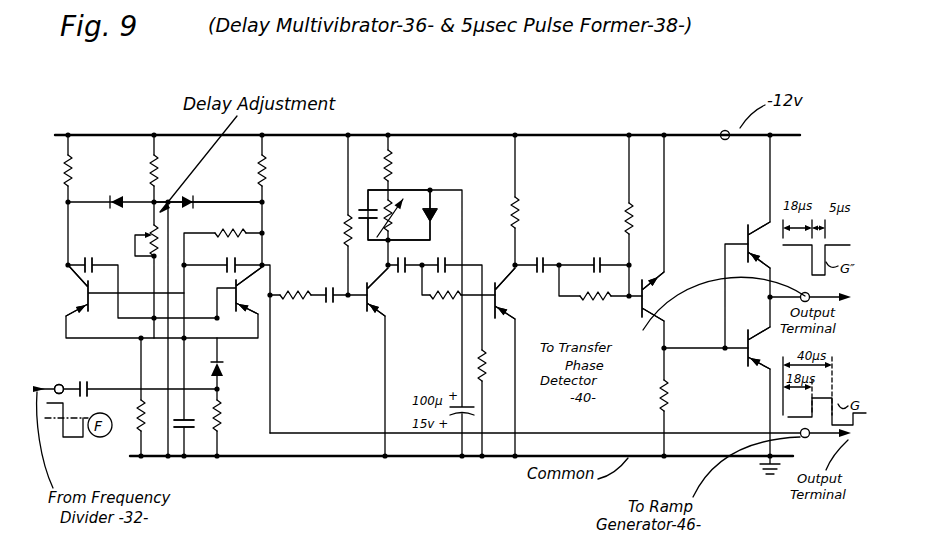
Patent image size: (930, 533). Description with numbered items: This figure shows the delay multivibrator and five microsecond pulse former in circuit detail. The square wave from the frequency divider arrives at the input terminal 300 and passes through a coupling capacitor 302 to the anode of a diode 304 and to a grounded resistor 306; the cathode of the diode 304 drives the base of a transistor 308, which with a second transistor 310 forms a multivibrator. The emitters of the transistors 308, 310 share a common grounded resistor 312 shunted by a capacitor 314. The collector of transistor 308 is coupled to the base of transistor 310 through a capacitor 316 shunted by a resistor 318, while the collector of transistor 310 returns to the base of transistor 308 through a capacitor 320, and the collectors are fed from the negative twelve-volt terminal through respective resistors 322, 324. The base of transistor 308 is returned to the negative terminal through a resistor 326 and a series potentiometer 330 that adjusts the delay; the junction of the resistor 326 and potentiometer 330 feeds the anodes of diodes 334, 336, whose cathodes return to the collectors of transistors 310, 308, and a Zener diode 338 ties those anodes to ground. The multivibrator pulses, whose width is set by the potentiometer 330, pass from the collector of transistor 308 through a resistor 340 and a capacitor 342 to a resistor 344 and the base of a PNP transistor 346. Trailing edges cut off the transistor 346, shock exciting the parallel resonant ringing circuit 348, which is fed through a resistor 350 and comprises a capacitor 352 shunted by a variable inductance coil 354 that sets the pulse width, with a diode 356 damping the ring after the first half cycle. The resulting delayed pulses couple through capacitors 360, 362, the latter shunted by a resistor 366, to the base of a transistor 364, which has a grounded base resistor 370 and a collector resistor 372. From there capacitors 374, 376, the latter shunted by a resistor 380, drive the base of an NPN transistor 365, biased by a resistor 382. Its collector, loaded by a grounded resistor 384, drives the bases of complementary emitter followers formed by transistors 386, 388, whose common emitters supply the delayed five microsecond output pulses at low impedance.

The input terminal 300 is at (60, 384).
The coupling capacitor 302 is at (90, 384).
The diode 304 is at (220, 372).
The grounded resistor 306 is at (240, 412).
The transistor 308 is at (225, 290).
The second transistor 310 is at (100, 306).
The common grounded resistor 312 is at (137, 425).
The capacitor 314 is at (190, 430).
The capacitor 316 is at (240, 265).
The resistor 318 is at (258, 216).
The capacitor 320 is at (108, 246).
The resistor 322 is at (264, 178).
The resistor 324 is at (70, 168).
The resistor 326 is at (158, 176).
The series potentiometer 330 is at (140, 224).
The diode 334 is at (110, 199).
The diode 336 is at (197, 199).
The Zener diode 338 is at (215, 233).
The resistor 340 is at (300, 300).
The capacitor 342 is at (300, 290).
The resistor 344 is at (345, 236).
The PNP transistor 346 is at (366, 312).
The parallel resonant ringing circuit 348 is at (406, 232).
The resistor 350 is at (392, 162).
The capacitor 352 is at (362, 207).
The variable inductance coil 354 is at (402, 200).
The diode 356 is at (436, 205).
The capacitor 360 is at (396, 263).
The capacitor 362 is at (448, 262).
The transistor 364 is at (490, 312).
The further transistor 365 is at (640, 312).
The resistor 366 is at (438, 302).
The grounded resistor 370 is at (478, 362).
The resistor 372 is at (519, 208).
The capacitor 374 is at (535, 260).
The capacitor 376 is at (592, 260).
The resistor 380 is at (590, 302).
The resistor 382 is at (622, 212).
The grounded resistor 384 is at (658, 408).
The transistor 386 is at (746, 370).
The transistor 388 is at (746, 240).